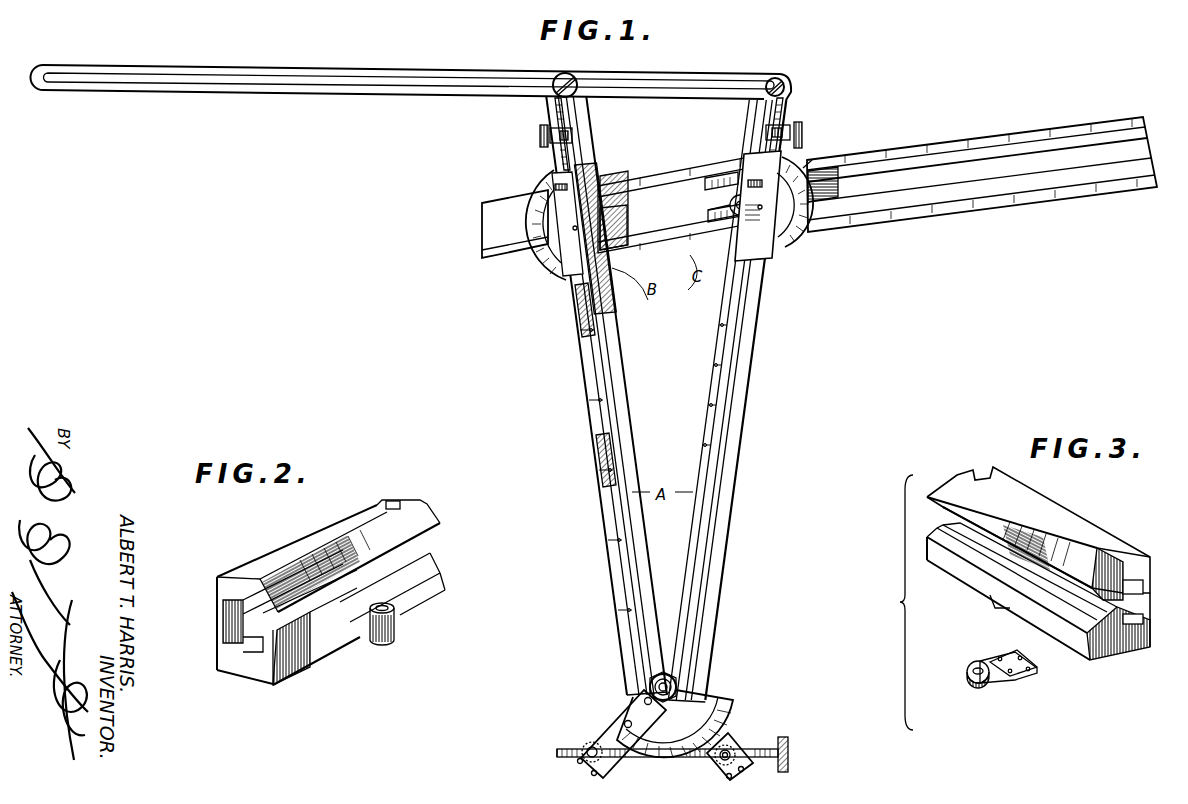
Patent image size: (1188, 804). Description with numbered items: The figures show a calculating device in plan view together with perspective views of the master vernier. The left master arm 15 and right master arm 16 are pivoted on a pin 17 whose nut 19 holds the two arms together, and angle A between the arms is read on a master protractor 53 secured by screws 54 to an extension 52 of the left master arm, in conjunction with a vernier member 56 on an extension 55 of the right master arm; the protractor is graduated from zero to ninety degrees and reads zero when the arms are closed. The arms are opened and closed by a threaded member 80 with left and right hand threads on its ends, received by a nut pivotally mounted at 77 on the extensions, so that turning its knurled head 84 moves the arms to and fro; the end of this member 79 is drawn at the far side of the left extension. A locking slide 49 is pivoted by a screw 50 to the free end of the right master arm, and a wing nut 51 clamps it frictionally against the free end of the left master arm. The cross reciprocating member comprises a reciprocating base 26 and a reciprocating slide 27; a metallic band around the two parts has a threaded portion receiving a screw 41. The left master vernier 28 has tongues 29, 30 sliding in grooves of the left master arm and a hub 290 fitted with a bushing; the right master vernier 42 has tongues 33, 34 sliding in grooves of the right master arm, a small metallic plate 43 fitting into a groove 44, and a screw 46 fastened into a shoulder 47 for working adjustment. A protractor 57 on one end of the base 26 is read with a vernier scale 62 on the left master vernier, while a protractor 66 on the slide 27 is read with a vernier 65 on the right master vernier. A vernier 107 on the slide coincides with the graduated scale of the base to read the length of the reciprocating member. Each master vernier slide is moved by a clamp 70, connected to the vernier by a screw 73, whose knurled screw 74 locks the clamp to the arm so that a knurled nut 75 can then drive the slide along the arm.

In FIG. 1, the left master arm 15 is at (605, 512).
In FIG. 1, the right master arm 16 is at (733, 517).
In FIG. 1, the pin 17 is at (652, 681).
In FIG. 1, the nut 19 is at (676, 685).
In FIG. 1, the reciprocating base 26 is at (846, 234).
In FIG. 1, the reciprocating slide 27 is at (668, 183).
In FIG. 1, the left master vernier 28 is at (588, 177).
In FIG. 2, the left master vernier 28 is at (300, 661).
In FIG. 1, the tongue 29 is at (620, 208).
In FIG. 2, the tongue 29 is at (245, 613).
In FIG. 2, the tongue 30 is at (250, 648).
In FIG. 3, the tongue 33 is at (1143, 587).
In FIG. 3, the tongue 34 is at (1143, 619).
In FIG. 1, the screw 41 is at (617, 222).
In FIG. 1, the right master vernier 42 is at (770, 255).
In FIG. 3, the right master vernier 42 is at (1100, 545).
In FIG. 1, the small metallic plate 43 is at (730, 204).
In FIG. 3, the small metallic plate 43 is at (997, 683).
In FIG. 3, the groove 44 is at (1000, 603).
In FIG. 1, the screw 46 is at (725, 214).
In FIG. 3, the shoulder 47 is at (975, 684).
In FIG. 1, the locking slide 49 is at (355, 66).
In FIG. 1, the screw 50 is at (786, 82).
In FIG. 1, the wing nut 51 is at (560, 76).
In FIG. 1, the extension 52 is at (610, 730).
In FIG. 1, the master protractor 53 is at (692, 708).
In FIG. 1, the screws 54 is at (644, 701).
In FIG. 1, the extension 55 is at (735, 741).
In FIG. 1, the vernier member 56 is at (735, 722).
In FIG. 1, the protractor 57 is at (560, 271).
In FIG. 1, the vernier scale 62 is at (548, 202).
In FIG. 1, the vernier 65 is at (780, 250).
In FIG. 1, the protractor 66 is at (806, 164).
In FIG. 1, the clamp 70 is at (553, 128).
In FIG. 1, the screw 73 is at (556, 152).
In FIG. 1, the knurled screw 74 is at (540, 135).
In FIG. 1, the knurled nut 75 is at (574, 136).
In FIG. 1, the pivot 77 is at (588, 750).
In FIG. 1, the scale bar end 79 is at (557, 754).
In FIG. 1, the threaded member 80 is at (766, 758).
In FIG. 1, the knurled head 84 is at (789, 752).
In FIG. 1, the vernier 107 is at (716, 178).
In FIG. 2, the hub 290 is at (392, 629).